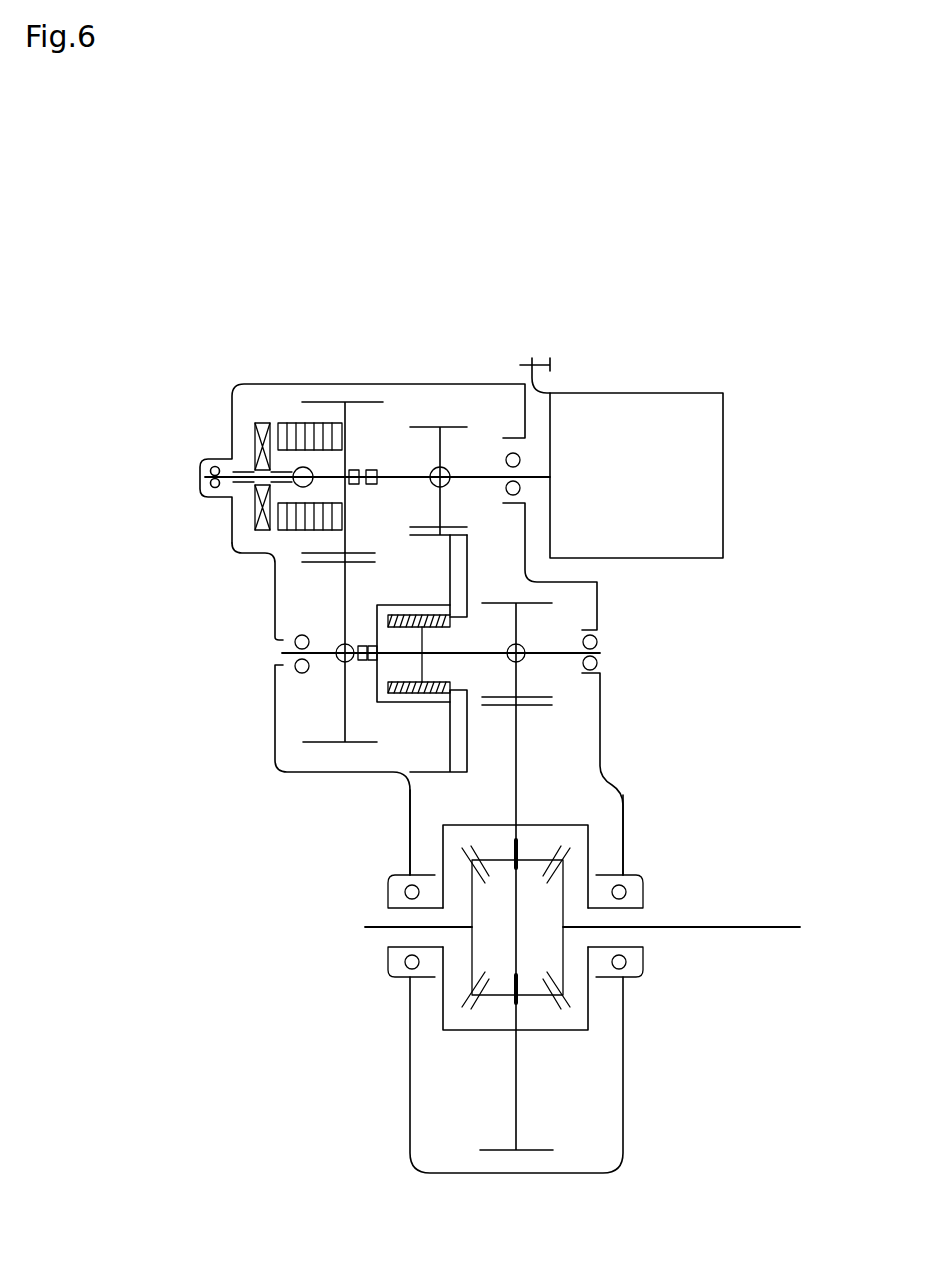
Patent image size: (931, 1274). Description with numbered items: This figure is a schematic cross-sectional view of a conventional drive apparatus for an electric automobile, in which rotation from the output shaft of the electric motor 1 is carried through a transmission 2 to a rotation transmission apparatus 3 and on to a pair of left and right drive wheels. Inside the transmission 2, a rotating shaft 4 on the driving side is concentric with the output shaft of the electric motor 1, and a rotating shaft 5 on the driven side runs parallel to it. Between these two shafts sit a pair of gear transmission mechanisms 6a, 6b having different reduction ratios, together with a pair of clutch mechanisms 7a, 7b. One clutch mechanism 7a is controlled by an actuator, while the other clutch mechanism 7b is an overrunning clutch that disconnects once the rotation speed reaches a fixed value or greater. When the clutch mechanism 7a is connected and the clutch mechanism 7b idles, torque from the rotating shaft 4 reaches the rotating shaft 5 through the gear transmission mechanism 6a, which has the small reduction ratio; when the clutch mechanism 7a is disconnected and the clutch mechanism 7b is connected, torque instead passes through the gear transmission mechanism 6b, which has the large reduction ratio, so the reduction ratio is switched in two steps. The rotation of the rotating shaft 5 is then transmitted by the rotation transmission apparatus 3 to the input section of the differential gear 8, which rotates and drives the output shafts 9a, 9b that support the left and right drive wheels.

The electric motor 1 is at (690, 408).
The transmission 2 is at (622, 610).
The rotation transmission apparatus 3 is at (640, 783).
The rotating shaft on the driving side 4 is at (497, 470).
The rotating shaft on the driven side 5 is at (543, 656).
The gear transmission mechanism 6a is at (344, 702).
The gear transmission mechanism 6b is at (437, 430).
The clutch mechanism 7a is at (312, 425).
The clutch mechanism 7b is at (420, 693).
The differential gear 8 is at (465, 995).
The output shaft 9a is at (713, 928).
The output shaft 9b is at (375, 928).